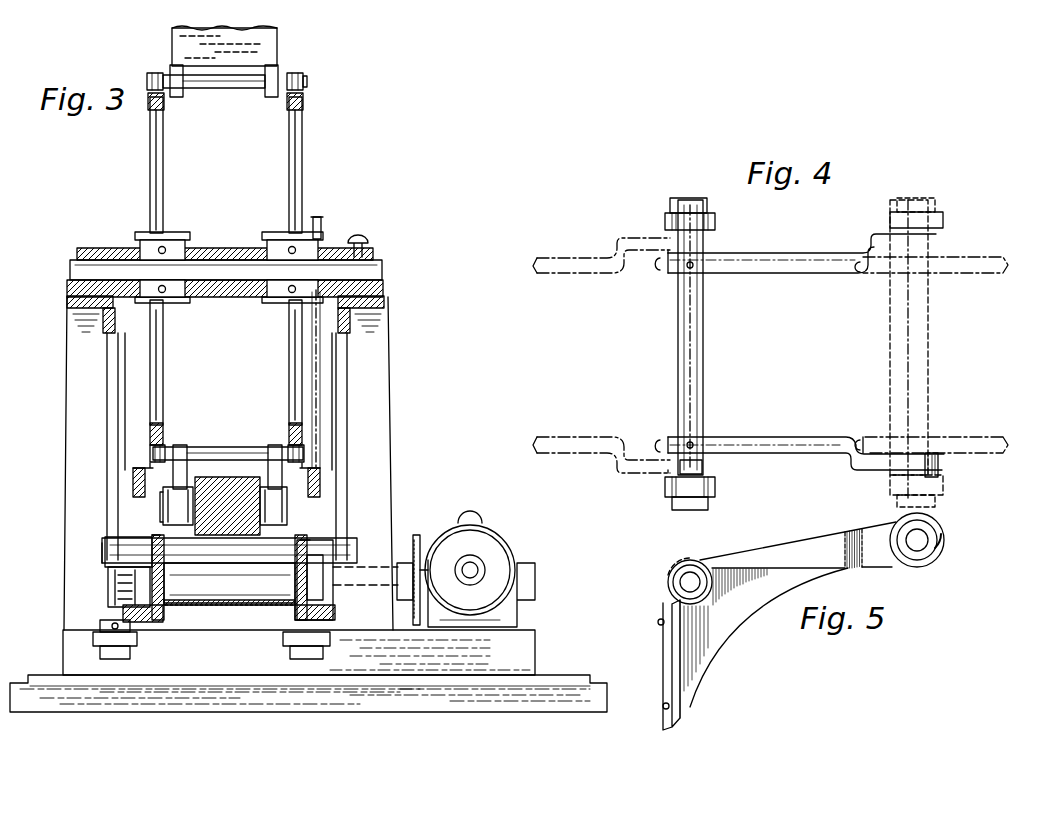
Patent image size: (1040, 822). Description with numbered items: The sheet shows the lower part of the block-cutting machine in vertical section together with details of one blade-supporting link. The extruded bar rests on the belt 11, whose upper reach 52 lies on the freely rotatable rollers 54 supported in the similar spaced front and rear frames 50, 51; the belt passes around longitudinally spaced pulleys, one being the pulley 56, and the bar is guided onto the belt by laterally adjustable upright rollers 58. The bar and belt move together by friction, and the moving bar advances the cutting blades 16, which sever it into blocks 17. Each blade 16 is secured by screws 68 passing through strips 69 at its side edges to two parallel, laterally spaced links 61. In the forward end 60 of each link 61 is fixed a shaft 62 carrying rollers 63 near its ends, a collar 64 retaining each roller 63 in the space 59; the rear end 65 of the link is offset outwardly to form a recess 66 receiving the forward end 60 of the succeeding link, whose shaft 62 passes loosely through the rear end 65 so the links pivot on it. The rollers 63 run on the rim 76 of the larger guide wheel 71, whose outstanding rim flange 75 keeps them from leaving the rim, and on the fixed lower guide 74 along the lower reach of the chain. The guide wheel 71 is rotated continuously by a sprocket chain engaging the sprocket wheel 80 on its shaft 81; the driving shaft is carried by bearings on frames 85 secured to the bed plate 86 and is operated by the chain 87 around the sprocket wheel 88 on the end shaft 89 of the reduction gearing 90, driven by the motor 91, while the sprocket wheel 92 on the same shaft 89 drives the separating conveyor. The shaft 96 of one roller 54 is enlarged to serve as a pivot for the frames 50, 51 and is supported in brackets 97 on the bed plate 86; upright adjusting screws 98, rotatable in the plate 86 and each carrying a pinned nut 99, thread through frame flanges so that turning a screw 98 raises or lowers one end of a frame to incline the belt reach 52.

In FIG. 3, the belt 11 is at (225, 602).
In FIG. 3, the cutting blade 16 is at (258, 50).
In FIG. 4, the cutting blade 16 is at (678, 395).
In FIG. 5, the cutting blade 16 is at (668, 722).
In FIG. 3, the block 17 is at (240, 478).
In FIG. 3, the front frame 50 is at (305, 557).
In FIG. 3, the rear frame 51 is at (160, 536).
In FIG. 3, the upper reach of belt 52 is at (225, 542).
In FIG. 3, the roller 54 is at (200, 555).
In FIG. 3, the pulley 56 is at (200, 598).
In FIG. 3, the upright roller 58 is at (166, 511).
In FIG. 4, the space 59 is at (705, 468).
In FIG. 4, the forward end of link 60 is at (678, 437).
In FIG. 5, the forward end of link 60 is at (670, 565).
In FIG. 3, the link 61 is at (270, 90).
In FIG. 4, the link 61 is at (801, 434).
In FIG. 5, the link 61 is at (796, 534).
In FIG. 3, the shaft 62 is at (235, 86).
In FIG. 4, the shaft 62 is at (700, 400).
In FIG. 5, the shaft 62 is at (682, 585).
In FIG. 3, the roller 63 is at (292, 78).
In FIG. 4, the roller 63 is at (715, 222).
In FIG. 5, the roller 63 is at (668, 578).
In FIG. 4, the collar 64 is at (708, 505).
In FIG. 5, the collar 64 is at (676, 596).
In FIG. 4, the rear end of link 65 is at (940, 463).
In FIG. 5, the rear end of link 65 is at (905, 556).
In FIG. 4, the recess 66 is at (870, 438).
In FIG. 4, the screw 68 is at (668, 445).
In FIG. 5, the screw 68 is at (660, 625).
In FIG. 4, the strip 69 is at (668, 455).
In FIG. 5, the strip 69 is at (665, 673).
In FIG. 3, the larger guide wheel 71 is at (303, 182).
In FIG. 3, the fixed lower guide 74 is at (318, 482).
In FIG. 3, the rim flange 75 is at (308, 92).
In FIG. 3, the rim 76 is at (293, 102).
In FIG. 3, the sprocket wheel 80 is at (322, 225).
In FIG. 3, the shaft 81 is at (380, 266).
In FIG. 3, the frame 85 is at (384, 368).
In FIG. 3, the bed plate 86 is at (537, 645).
In FIG. 3, the chain 87 is at (312, 358).
In FIG. 3, the sprocket wheel 88 is at (303, 620).
In FIG. 3, the end shaft 89 is at (334, 578).
In FIG. 3, the reduction gearing 90 is at (425, 540).
In FIG. 3, the motor 91 is at (492, 538).
In FIG. 3, the sprocket wheel 92 is at (412, 540).
In FIG. 3, the pivot shaft 96 is at (105, 556).
In FIG. 3, the bracket 97 is at (114, 593).
In FIG. 3, the adjusting screw 98 is at (128, 606).
In FIG. 3, the nut 99 is at (118, 630).